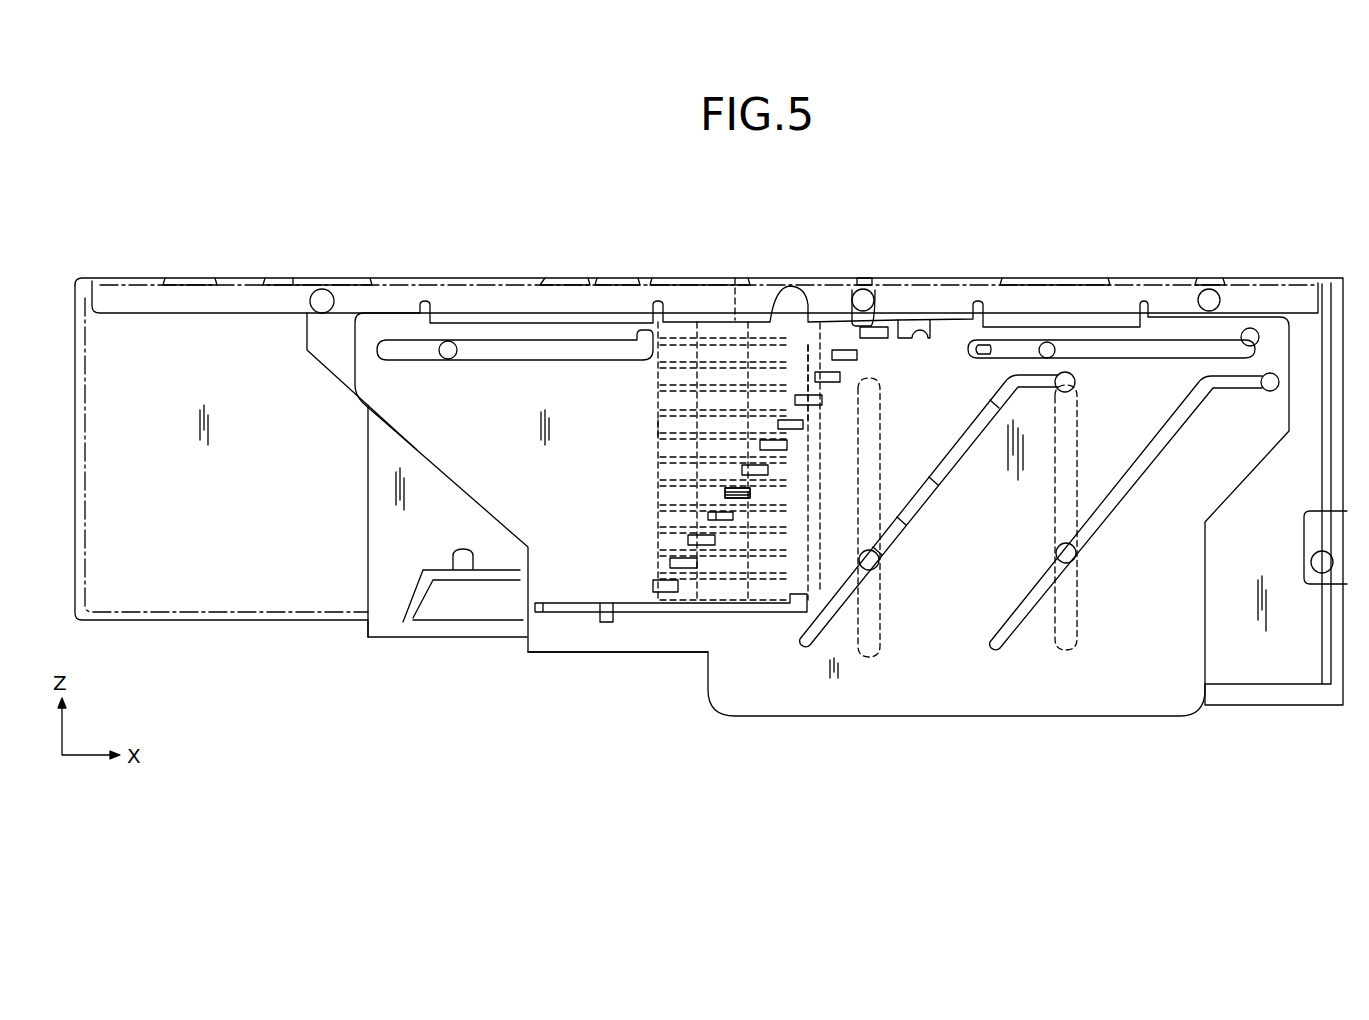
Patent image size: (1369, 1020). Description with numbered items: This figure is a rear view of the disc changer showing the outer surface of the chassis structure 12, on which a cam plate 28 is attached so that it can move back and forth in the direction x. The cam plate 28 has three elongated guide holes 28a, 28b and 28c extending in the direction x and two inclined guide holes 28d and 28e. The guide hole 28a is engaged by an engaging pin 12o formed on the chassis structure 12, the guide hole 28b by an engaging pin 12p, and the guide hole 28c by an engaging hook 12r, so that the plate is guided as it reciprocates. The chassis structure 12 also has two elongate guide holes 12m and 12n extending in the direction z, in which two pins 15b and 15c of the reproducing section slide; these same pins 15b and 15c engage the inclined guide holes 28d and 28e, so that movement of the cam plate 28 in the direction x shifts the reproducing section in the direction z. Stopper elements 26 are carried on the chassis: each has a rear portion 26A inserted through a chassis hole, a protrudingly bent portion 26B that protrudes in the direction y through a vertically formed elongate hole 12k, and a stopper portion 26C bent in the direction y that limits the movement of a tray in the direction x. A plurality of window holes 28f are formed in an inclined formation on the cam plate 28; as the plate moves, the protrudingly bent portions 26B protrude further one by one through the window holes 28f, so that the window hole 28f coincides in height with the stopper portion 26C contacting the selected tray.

The chassis structure 12 is at (932, 277).
The elongate hole 12k is at (735, 278).
The elongate guide hole 12m is at (1078, 425).
The elongate guide hole 12n is at (885, 428).
The engaging pin 12o is at (453, 360).
The engaging pin 12p is at (1052, 343).
The engaging hook 12r is at (603, 625).
The engaging pin 15b is at (879, 562).
The engaging pin 15c is at (1075, 556).
The stopper element 26 is at (762, 316).
The rear portion 26A is at (815, 507).
The protrudingly bent portion 26B is at (740, 500).
The stopper portion 26C is at (658, 428).
The cam plate 28 is at (960, 700).
The elongated guide hole 28a is at (480, 338).
The elongated guide hole 28b is at (1170, 338).
The elongated guide hole 28c is at (673, 613).
The inclined guide hole 28d is at (960, 452).
The inclined guide hole 28e is at (1147, 465).
The window hole 28f is at (870, 326).